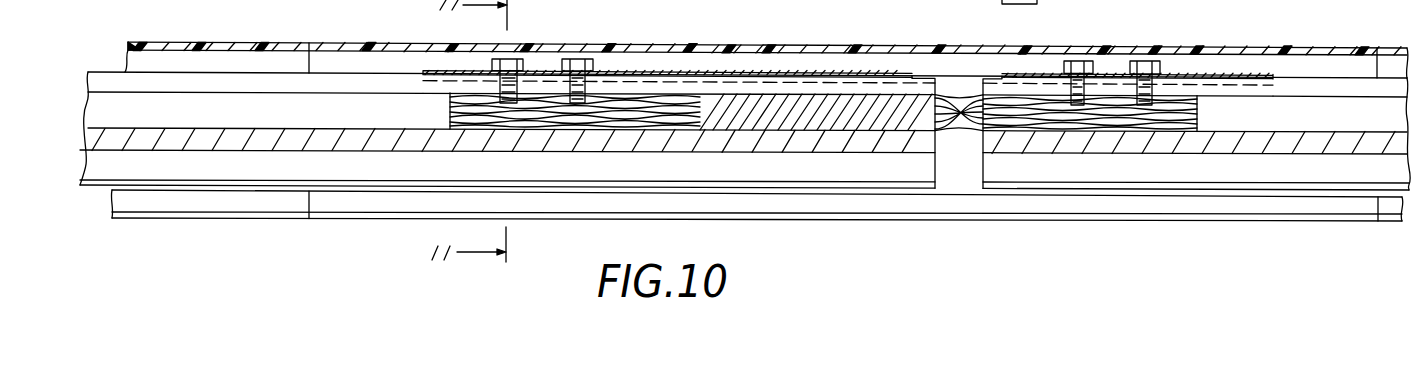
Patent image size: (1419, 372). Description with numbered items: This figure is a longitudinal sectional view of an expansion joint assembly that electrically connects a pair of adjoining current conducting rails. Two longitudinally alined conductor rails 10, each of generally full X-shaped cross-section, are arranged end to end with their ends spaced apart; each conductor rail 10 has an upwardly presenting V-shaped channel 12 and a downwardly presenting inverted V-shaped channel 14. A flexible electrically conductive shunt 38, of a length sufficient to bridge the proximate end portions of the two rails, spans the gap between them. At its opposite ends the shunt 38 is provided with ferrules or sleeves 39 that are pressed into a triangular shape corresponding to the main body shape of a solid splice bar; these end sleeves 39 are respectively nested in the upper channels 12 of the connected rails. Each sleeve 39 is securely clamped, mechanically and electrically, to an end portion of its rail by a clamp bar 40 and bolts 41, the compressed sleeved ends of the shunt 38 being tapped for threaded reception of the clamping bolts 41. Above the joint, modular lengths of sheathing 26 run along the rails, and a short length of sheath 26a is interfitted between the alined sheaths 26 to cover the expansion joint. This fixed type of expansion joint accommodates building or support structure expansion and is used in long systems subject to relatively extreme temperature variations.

The conductor rail 10 is at (337, 103).
The V-shaped channel 12 is at (115, 108).
The inverted V-shaped channel 14 is at (118, 163).
The sheath 26 is at (217, 42).
The short length of sheath 26a is at (848, 43).
The flexible electrically conductive shunt 38 is at (822, 105).
The ferrule or sleeve 39 is at (606, 95).
The clamp bar 40 is at (738, 85).
The bolts 41 is at (579, 65).